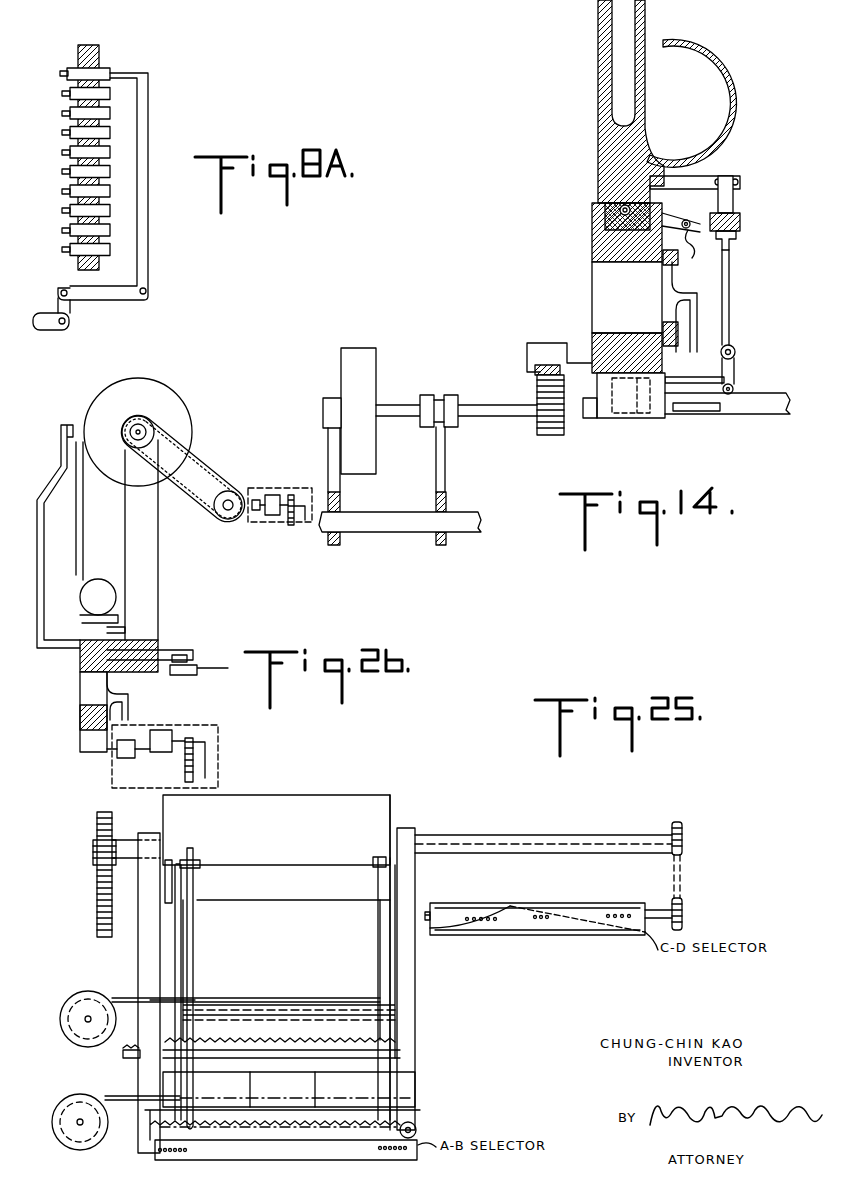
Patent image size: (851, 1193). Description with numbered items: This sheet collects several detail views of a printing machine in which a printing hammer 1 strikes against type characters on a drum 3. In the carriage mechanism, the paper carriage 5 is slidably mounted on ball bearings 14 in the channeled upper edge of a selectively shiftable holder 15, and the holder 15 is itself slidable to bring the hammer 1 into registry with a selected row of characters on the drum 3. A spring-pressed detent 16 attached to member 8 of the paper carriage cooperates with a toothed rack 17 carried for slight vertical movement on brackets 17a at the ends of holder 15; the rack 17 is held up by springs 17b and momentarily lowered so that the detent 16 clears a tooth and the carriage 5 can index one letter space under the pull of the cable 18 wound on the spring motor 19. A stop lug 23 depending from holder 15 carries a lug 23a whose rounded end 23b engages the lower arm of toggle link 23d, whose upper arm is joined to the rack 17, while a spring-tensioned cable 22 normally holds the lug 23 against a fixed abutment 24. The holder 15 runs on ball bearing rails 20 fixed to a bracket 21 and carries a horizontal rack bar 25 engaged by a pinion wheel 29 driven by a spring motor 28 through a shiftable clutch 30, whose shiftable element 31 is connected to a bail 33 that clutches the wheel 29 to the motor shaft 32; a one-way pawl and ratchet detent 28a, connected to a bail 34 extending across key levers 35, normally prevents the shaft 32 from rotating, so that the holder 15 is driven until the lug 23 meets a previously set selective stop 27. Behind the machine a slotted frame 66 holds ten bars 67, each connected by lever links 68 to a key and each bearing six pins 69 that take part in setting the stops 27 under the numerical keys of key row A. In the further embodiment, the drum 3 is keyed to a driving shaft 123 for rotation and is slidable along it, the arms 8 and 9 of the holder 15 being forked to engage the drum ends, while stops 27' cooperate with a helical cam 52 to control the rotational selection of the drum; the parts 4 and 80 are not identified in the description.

In FIG. 8A, the slotted frame 66 is at (100, 55).
In FIG. 8A, the bars 67 is at (75, 68).
In FIG. 8A, the pins 69 is at (60, 73).
In FIG. 8A, the lever links 68 is at (148, 152).
In FIG. 14, the paper carriage 5 is at (598, 60).
In FIG. 25, the paper carriage 5 is at (182, 955).
In FIG. 14, the ring member 4 is at (732, 70).
In FIG. 25, the ring member 4 is at (300, 1006).
In FIG. 14, the ball bearings 14 is at (620, 208).
In FIG. 14, the selectively shiftable holder 15 is at (592, 246).
In FIG. 26, the selectively shiftable holder 15 is at (160, 646).
In FIG. 25, the selectively shiftable holder 15 is at (416, 1082).
In FIG. 14, the spring-pressed detent 16 is at (733, 206).
In FIG. 14, the toothed rack 17 is at (742, 224).
In FIG. 14, the bracket 17a is at (676, 215).
In FIG. 14, the springs 17b is at (702, 249).
In FIG. 14, the ball bearing guides or rails 20 is at (663, 268).
In FIG. 14, the fixed bracket 21 is at (692, 300).
In FIG. 14, the stop lug 23 is at (612, 396).
In FIG. 25, the stop lug 23 is at (148, 1148).
In FIG. 14, the lug 23a is at (637, 390).
In FIG. 14, the rounded end 23b is at (722, 380).
In FIG. 14, the toggle link 23d is at (731, 320).
In FIG. 14, the fixed abutment 24 is at (762, 414).
In FIG. 14, the horizontal rack bar 25 is at (530, 362).
In FIG. 14, the stop pins 27 is at (696, 428).
In FIG. 25, the stop pins 27 is at (286, 1161).
In FIG. 14, the pinion wheel 29 is at (551, 436).
In FIG. 26, the printing hammer 1 is at (61, 445).
In FIG. 25, the printing hammer 1 is at (194, 858).
In FIG. 26, the arm 9 is at (158, 562).
In FIG. 25, the arm 9 is at (416, 970).
In FIG. 26, the spring motor 28 is at (362, 348).
In FIG. 25, the spring motor 28 is at (62, 1094).
In FIG. 26, the one-way pawl and ratchet detent 28a is at (330, 398).
In FIG. 26, the shiftable clutch arrangement 30 is at (440, 386).
In FIG. 26, the shiftable element 31 is at (435, 427).
In FIG. 26, the motor shaft 32 is at (396, 404).
In FIG. 26, the bail 33 is at (447, 503).
In FIG. 26, the bail 34 is at (342, 503).
In FIG. 26, the key levers 35 is at (466, 530).
In FIG. 26, the key row A is at (285, 512).
In FIG. 25, the drum 3 is at (356, 795).
In FIG. 25, the arm 8 is at (140, 945).
In FIG. 25, the gear 80 is at (97, 828).
In FIG. 25, the cord or cable 18 is at (118, 998).
In FIG. 25, the spring motor 19 is at (72, 992).
In FIG. 25, the spring-tensioned cord or cable 22 is at (112, 1096).
In FIG. 25, the helical cam 52 is at (618, 935).
In FIG. 25, the driving shaft 123 is at (604, 835).
In FIG. 25, the stops 27' is at (537, 938).